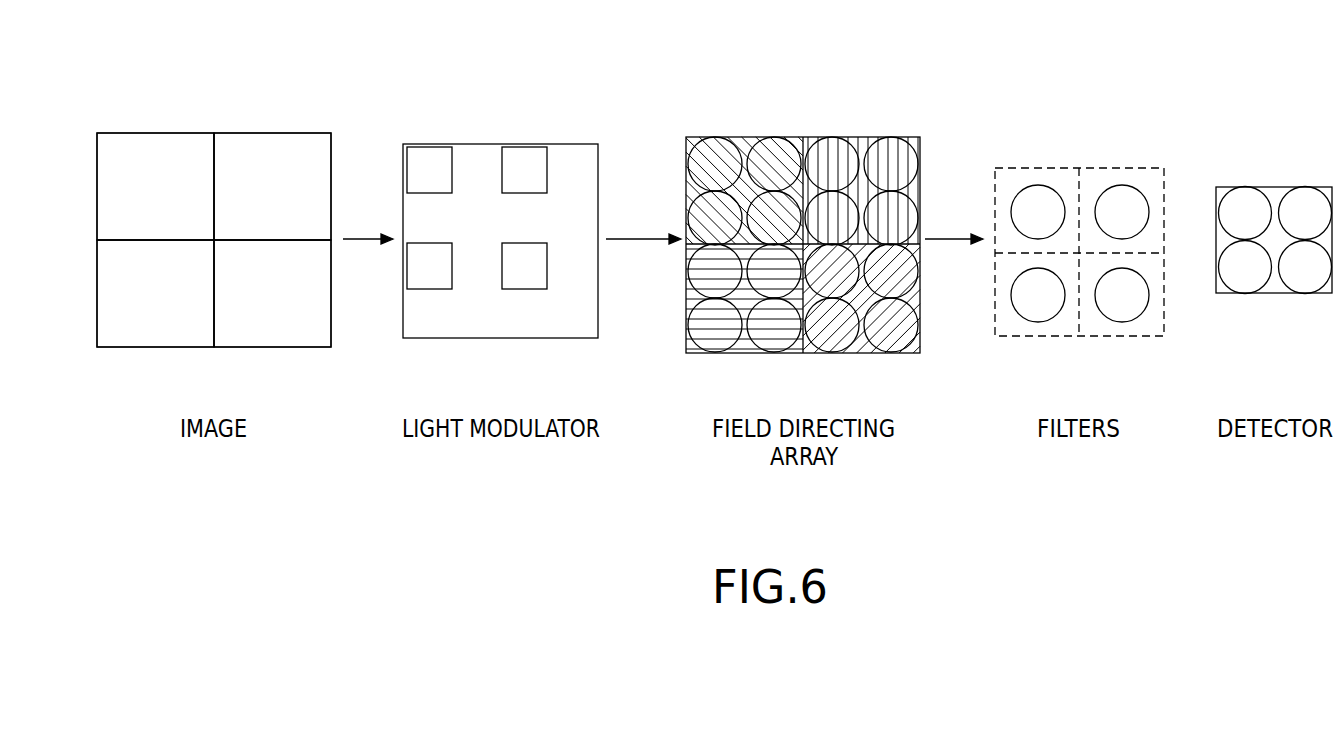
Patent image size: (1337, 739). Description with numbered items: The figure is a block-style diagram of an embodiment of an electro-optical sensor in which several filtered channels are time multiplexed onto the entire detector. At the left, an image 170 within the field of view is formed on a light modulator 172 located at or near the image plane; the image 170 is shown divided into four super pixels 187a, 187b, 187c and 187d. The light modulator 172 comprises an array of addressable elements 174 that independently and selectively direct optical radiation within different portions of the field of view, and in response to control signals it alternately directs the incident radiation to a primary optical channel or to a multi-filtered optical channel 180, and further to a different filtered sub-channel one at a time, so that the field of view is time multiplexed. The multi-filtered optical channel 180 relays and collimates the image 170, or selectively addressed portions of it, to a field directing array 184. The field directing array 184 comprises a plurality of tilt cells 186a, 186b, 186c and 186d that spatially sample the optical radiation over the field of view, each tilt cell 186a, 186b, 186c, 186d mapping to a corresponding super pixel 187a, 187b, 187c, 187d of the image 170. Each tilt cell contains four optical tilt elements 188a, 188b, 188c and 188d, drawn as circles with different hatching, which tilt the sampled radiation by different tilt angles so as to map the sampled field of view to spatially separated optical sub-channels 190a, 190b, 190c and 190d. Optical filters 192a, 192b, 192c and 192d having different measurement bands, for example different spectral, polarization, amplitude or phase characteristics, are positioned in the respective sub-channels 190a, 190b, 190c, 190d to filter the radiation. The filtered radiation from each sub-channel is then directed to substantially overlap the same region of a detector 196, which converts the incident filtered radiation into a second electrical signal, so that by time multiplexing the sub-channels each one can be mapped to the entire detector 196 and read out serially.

The image 170 is at (222, 92).
The light modulator 172 is at (514, 116).
The addressable elements 174 is at (409, 283).
The multi-filtered optical channel 180 is at (648, 478).
The field directing array 184 is at (777, 217).
The tilt cell 186a is at (718, 176).
The tilt cell 186b is at (913, 137).
The tilt cell 186c is at (734, 354).
The tilt cell 186d is at (862, 354).
The super pixel 187a is at (167, 133).
The super pixel 187b is at (270, 133).
The super pixel 187c is at (166, 347).
The super pixel 187d is at (281, 347).
The optical tilt element 188a is at (706, 147).
The optical tilt element 188b is at (781, 146).
The optical tilt element 188c is at (697, 217).
The optical tilt element 188d is at (762, 222).
The optical sub-channel 190a is at (1038, 168).
The optical sub-channel 190b is at (1145, 168).
The optical sub-channel 190c is at (1039, 336).
The optical sub-channel 190d is at (1134, 336).
The optical filter 192a is at (1019, 194).
The optical filter 192b is at (1145, 198).
The optical filter 192c is at (1043, 322).
The optical filter 192d is at (1118, 322).
The detector 196 is at (1282, 187).